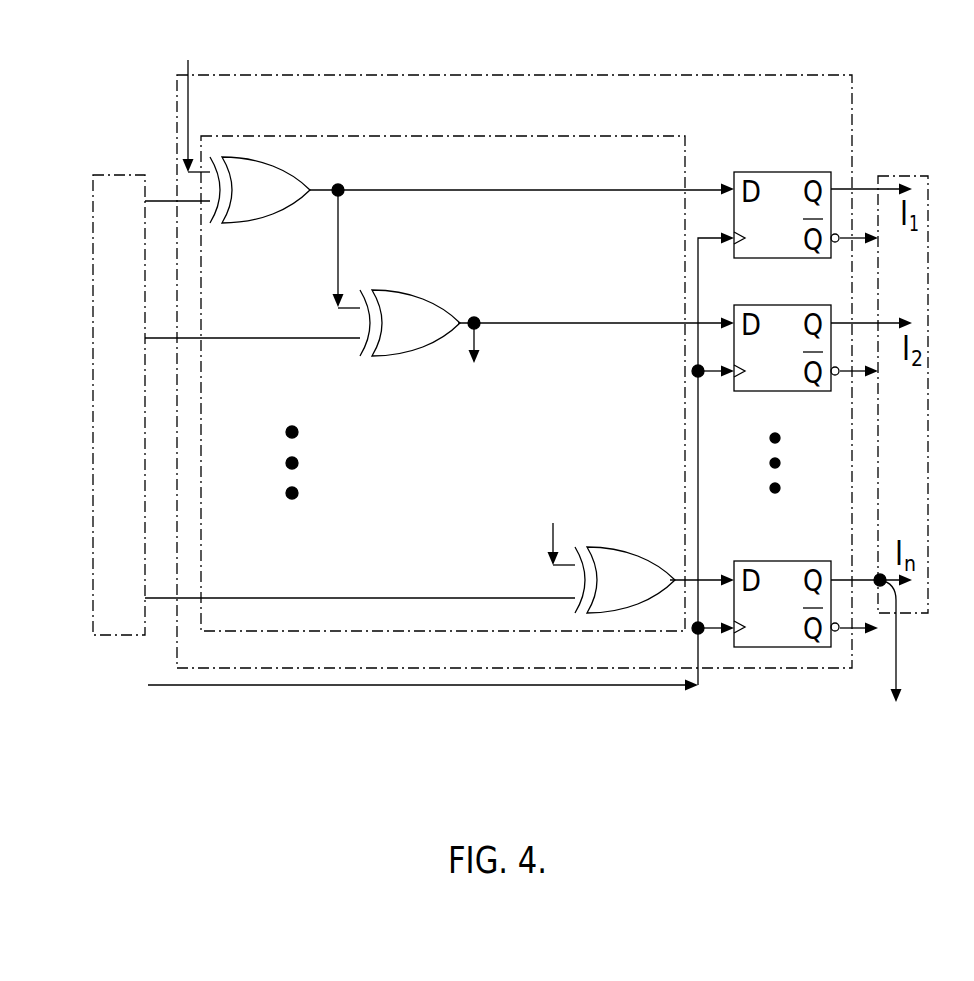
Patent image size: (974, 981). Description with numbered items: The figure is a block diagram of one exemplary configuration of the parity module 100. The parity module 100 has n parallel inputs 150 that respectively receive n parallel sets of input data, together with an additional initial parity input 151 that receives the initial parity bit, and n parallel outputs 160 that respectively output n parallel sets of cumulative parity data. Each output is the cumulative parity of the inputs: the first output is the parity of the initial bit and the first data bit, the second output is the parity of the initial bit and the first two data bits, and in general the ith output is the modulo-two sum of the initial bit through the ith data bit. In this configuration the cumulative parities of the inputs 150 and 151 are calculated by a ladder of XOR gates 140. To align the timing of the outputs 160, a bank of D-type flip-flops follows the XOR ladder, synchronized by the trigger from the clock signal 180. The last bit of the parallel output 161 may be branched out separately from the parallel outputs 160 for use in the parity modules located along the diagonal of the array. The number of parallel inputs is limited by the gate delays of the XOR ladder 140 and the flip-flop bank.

The parity module 100 is at (514, 335).
The ladder of XOR gates 140 is at (443, 352).
The parallel inputs 150 is at (97, 369).
The initial parity input 151 is at (177, 89).
The parallel outputs 160 is at (900, 362).
The last bit of the parallel output 161 is at (922, 669).
The clock signal CLK 180 is at (399, 495).